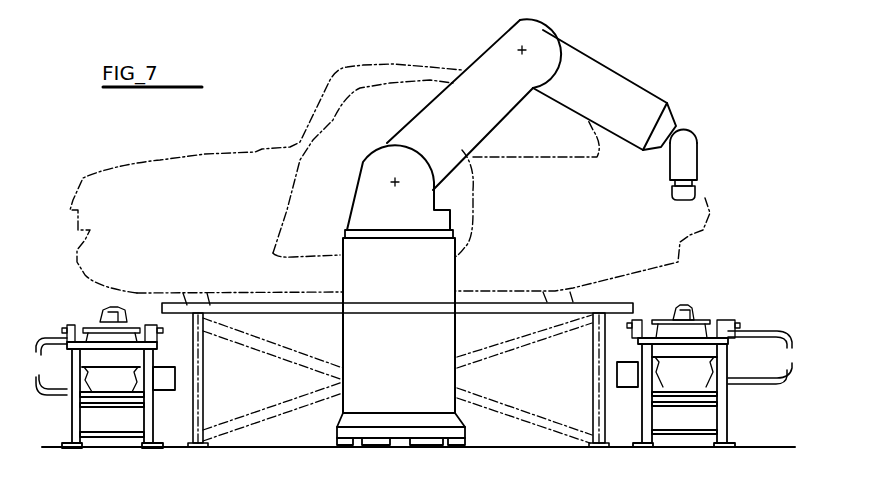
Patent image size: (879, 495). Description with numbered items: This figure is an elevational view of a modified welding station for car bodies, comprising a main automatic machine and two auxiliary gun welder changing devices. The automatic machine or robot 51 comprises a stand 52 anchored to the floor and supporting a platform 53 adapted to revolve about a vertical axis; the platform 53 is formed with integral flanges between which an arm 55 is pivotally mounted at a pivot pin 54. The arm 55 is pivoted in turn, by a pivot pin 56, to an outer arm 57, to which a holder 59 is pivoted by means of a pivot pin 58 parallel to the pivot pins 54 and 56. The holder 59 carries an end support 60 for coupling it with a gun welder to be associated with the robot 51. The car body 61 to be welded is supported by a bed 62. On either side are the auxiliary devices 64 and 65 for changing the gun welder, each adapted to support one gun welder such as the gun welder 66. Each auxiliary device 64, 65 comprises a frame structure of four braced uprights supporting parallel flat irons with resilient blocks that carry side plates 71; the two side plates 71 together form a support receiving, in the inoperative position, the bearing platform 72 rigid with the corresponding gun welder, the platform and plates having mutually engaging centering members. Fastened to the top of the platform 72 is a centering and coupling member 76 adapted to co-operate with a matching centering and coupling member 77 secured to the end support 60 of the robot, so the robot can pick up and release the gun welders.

The automatic machine or robot 51 is at (470, 272).
The stand 52 is at (360, 370).
The platform 53 is at (343, 233).
The pivot pin 54 is at (390, 182).
The arm 55 is at (491, 112).
The pivot pin 56 is at (527, 49).
The outer arm 57 is at (622, 85).
The pivot pin 58 is at (688, 137).
The holder 59 is at (688, 158).
The end support 60 is at (693, 182).
The car body 61 is at (158, 153).
The bed 62 is at (259, 326).
The auxiliary device 64 is at (93, 379).
The auxiliary device 65 is at (740, 414).
The gun welder 66 is at (56, 327).
The side plate 71 is at (708, 317).
The bearing platform 72 is at (670, 318).
The centering and coupling member 76 is at (692, 318).
The centering and coupling member 77 is at (675, 205).